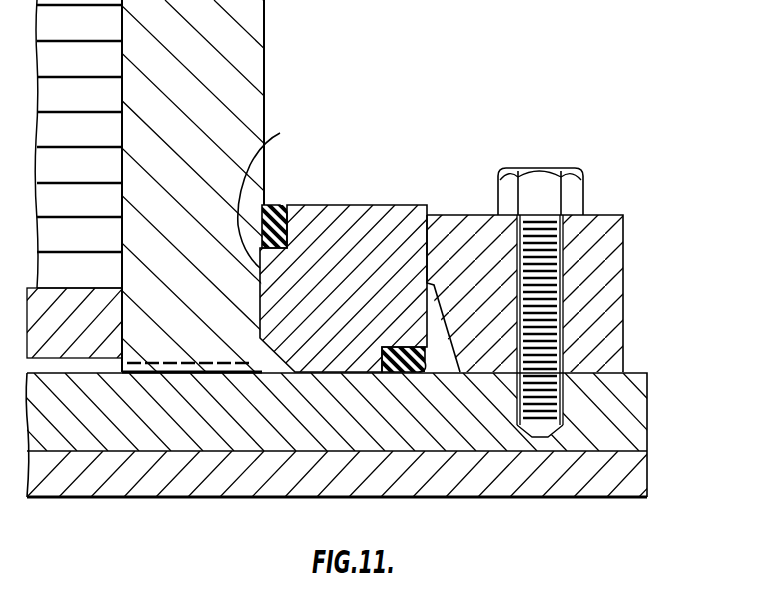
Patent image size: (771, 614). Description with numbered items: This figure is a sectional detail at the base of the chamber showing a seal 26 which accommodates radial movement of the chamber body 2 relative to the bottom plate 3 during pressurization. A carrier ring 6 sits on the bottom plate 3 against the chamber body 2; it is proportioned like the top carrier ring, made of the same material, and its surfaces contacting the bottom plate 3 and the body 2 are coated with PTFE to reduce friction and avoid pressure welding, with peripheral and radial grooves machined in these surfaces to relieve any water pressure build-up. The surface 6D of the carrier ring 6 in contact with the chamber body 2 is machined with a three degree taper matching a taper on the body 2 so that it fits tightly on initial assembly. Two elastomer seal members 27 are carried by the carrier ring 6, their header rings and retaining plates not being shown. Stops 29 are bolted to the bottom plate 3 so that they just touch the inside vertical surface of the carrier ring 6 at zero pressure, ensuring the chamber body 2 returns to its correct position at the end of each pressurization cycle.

The chamber body 2 is at (218, 92).
The tapered contact surface of carrier ring 6D is at (280, 194).
The carrier ring 6 is at (335, 220).
The seal 26 is at (379, 201).
The elastomer seal member 27 is at (280, 208).
The stop 29 is at (606, 222).
The bottom plate 3 is at (312, 420).